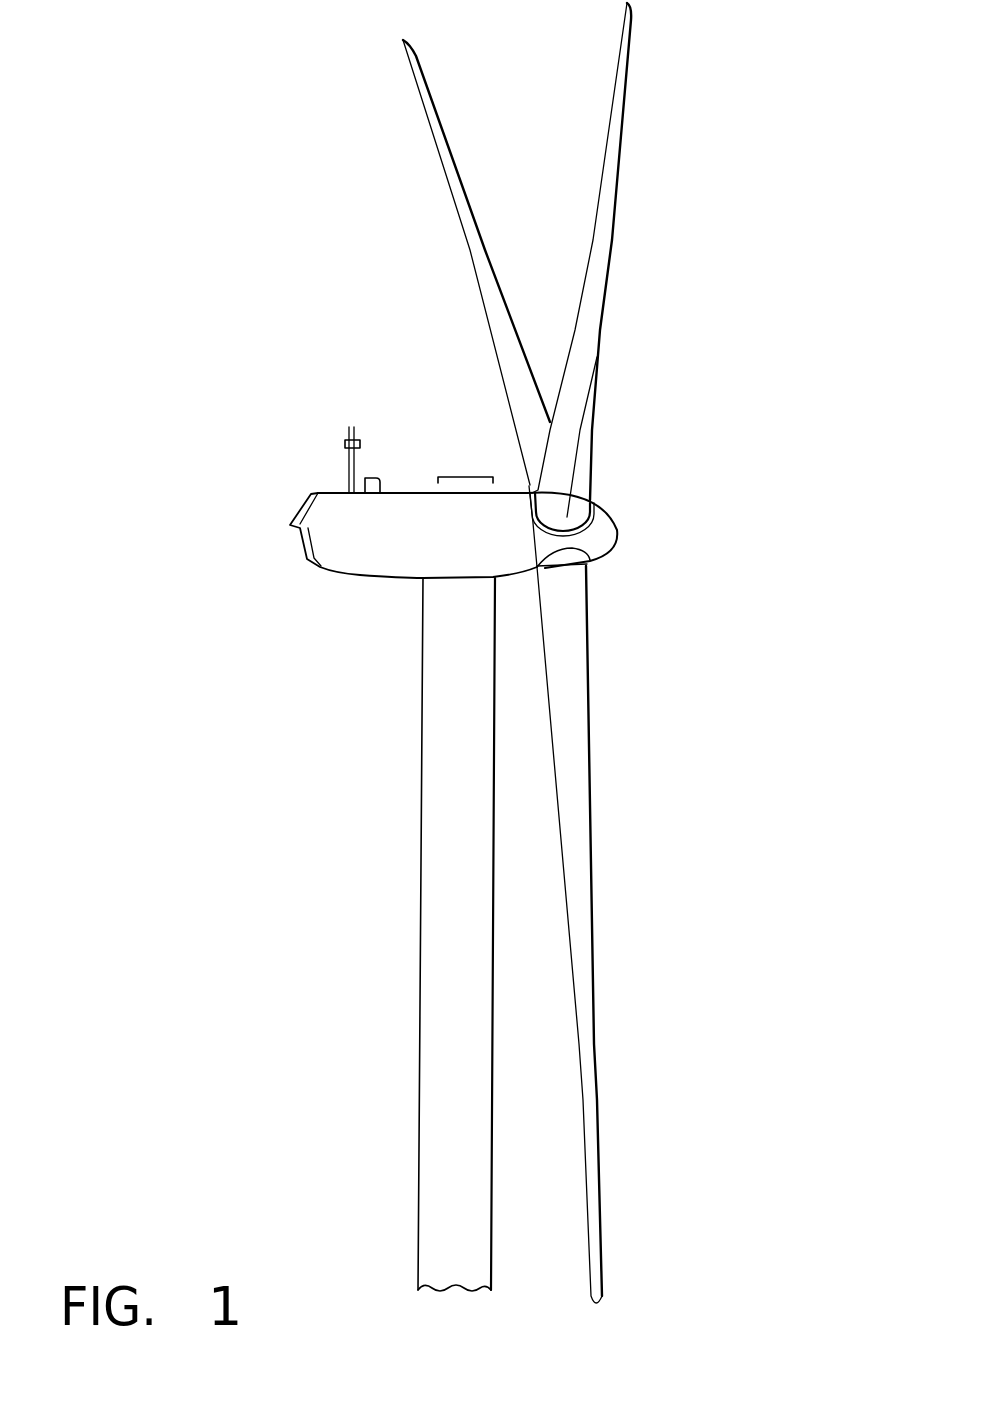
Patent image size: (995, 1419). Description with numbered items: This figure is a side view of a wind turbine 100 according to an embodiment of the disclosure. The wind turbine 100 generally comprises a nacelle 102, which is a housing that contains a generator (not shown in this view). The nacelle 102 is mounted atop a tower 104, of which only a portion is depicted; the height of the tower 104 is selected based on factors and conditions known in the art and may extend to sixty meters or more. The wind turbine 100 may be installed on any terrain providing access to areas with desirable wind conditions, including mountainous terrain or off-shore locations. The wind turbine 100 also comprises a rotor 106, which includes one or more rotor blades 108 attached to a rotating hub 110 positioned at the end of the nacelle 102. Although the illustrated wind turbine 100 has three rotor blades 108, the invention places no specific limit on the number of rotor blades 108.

The wind turbine 100 is at (258, 256).
The nacelle 102 is at (347, 577).
The tower 104 is at (420, 933).
The rotor 106 is at (718, 232).
The rotor blades 108 is at (419, 95).
The rotating hub 110 is at (617, 532).